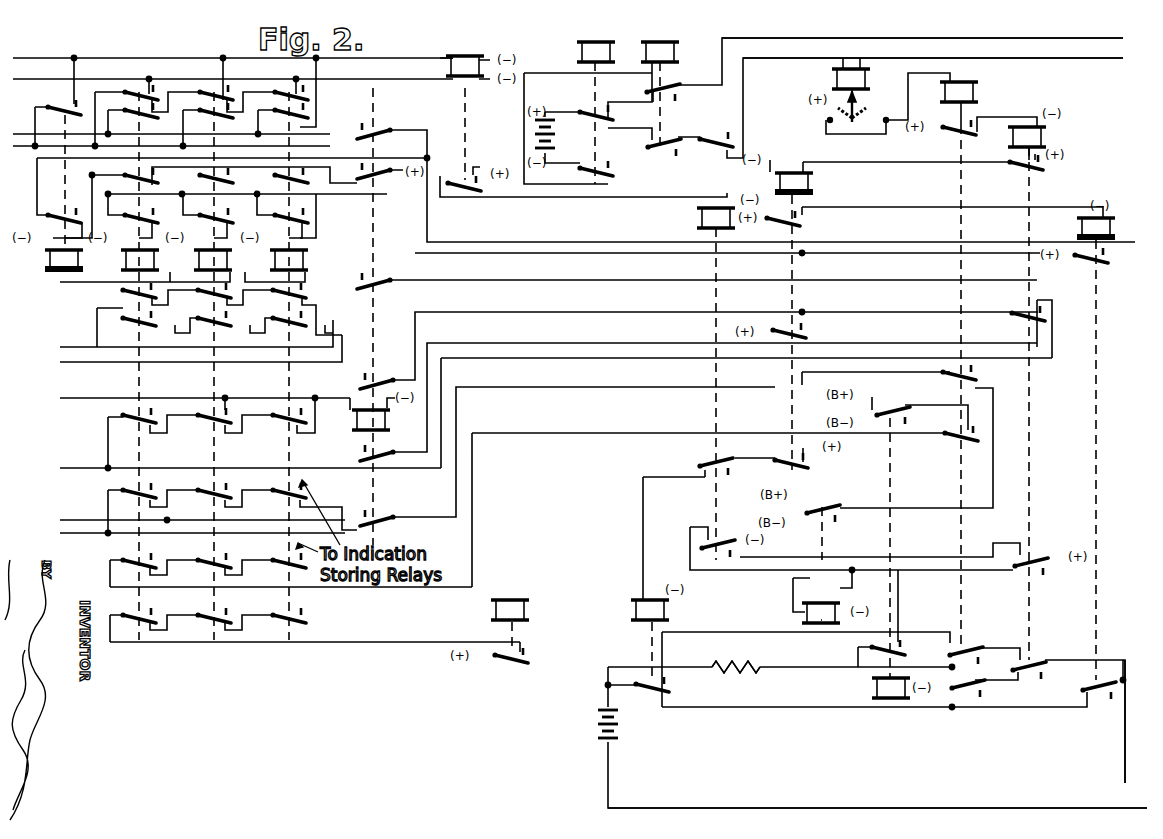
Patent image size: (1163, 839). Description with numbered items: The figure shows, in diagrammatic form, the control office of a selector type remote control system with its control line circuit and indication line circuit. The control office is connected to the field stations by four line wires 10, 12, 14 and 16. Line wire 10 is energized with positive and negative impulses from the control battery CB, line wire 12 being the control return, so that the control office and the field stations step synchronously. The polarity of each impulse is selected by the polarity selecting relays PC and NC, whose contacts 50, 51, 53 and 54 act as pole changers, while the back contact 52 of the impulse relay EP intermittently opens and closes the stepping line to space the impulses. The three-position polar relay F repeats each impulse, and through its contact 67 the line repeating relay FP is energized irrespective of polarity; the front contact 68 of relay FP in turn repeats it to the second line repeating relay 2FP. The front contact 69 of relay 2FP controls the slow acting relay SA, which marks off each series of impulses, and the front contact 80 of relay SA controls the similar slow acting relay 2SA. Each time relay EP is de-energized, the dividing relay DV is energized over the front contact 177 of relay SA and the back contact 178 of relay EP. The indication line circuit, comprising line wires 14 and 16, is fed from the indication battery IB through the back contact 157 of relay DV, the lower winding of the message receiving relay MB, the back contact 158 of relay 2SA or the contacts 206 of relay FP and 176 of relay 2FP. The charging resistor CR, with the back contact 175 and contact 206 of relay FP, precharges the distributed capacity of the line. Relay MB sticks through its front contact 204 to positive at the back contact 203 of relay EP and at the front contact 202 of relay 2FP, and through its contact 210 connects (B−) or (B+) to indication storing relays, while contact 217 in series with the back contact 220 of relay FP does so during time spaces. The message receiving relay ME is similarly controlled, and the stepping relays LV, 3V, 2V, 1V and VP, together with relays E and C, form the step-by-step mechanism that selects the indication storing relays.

The line wire 10 is at (1131, 51).
The line wire 12 is at (1131, 31).
The line wire 14 is at (1137, 722).
The line wire 16 is at (1123, 808).
The contact 50 is at (589, 105).
The contact 51 is at (663, 153).
The back contact 52 is at (716, 132).
The contact 53 is at (669, 94).
The contact 54 is at (600, 178).
The contact 67 is at (858, 112).
The front contact 68 is at (956, 135).
The front contact 69 is at (1021, 170).
The front contact 80 is at (805, 226).
The back contact 157 is at (668, 684).
The back contact 158 is at (1102, 694).
The back contact 175 is at (964, 652).
The contact 176 is at (1032, 672).
The front contact 177 is at (790, 467).
The back contact 178 is at (702, 459).
The front contact 202 is at (1030, 564).
The back contact 203 is at (714, 539).
The front contact 204 is at (898, 652).
The contact 206 is at (966, 688).
The contact 210 is at (893, 418).
The contact 217 is at (824, 514).
The back contact 220 is at (948, 380).
The stepping relay LV is at (48, 263).
The stepping relay 3V is at (127, 263).
The stepping relay 2V is at (200, 263).
The stepping relay 1V is at (276, 263).
The stepping relay VP is at (381, 415).
The relay E is at (469, 55).
The polarity selecting relay NC is at (615, 52).
The polarity selecting relay PC is at (679, 52).
The control battery CB is at (557, 134).
The impulse relay EP is at (702, 219).
The polar relay F is at (865, 79).
The line repeating relay FP is at (973, 92).
The second line repeating relay 2FP is at (1041, 137).
The slow acting relay SA is at (808, 184).
The slow acting relay 2SA is at (1110, 229).
The dividing relay DV is at (664, 610).
The relay C is at (524, 610).
The message receiving relay ME is at (840, 612).
The message receiving relay MB is at (875, 695).
The indication battery IB is at (598, 724).
The charging resistor CR is at (736, 656).